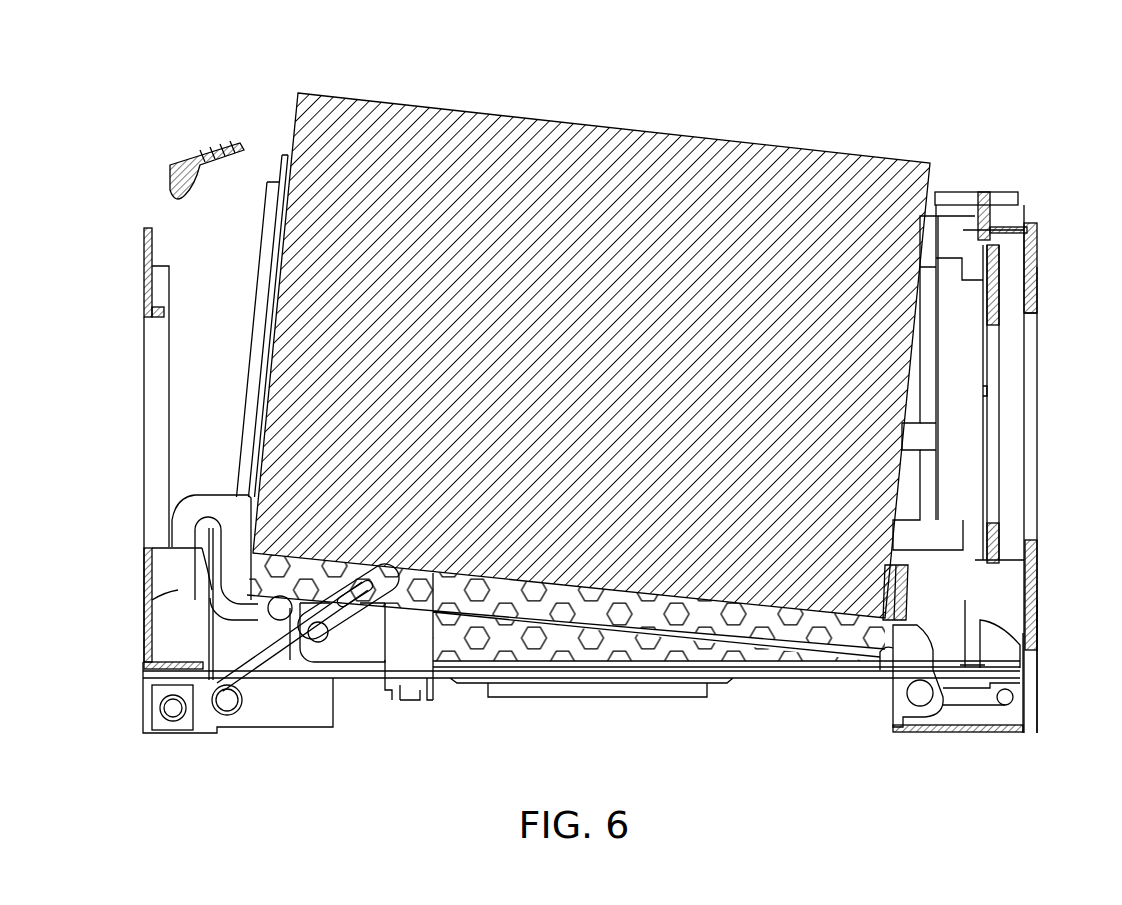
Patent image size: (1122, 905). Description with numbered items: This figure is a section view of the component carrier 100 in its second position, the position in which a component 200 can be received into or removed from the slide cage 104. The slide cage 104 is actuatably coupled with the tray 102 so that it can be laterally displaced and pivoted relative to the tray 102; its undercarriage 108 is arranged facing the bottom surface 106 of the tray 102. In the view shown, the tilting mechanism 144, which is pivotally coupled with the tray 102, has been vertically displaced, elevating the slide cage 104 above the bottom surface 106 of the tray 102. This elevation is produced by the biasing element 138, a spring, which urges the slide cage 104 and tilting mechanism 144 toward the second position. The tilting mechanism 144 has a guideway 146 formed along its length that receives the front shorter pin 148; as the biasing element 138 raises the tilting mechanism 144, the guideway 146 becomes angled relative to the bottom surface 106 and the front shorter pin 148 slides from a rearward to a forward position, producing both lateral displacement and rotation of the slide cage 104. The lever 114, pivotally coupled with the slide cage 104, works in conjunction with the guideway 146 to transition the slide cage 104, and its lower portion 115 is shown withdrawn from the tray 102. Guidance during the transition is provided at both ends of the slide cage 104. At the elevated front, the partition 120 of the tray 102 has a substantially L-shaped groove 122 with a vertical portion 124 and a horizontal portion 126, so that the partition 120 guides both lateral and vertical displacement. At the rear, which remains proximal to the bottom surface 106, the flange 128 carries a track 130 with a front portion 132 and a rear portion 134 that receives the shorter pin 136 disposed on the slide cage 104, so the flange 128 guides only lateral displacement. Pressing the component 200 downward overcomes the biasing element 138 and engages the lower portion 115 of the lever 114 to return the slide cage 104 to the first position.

The component carrier 100 is at (262, 72).
The tray 102 is at (143, 243).
The slide cage 104 is at (590, 620).
The bottom surface 106 is at (487, 687).
The undercarriage 108 is at (690, 650).
The lever 114 is at (207, 150).
The lower portion 115 is at (403, 700).
The partition 120 is at (178, 600).
The groove 122 is at (222, 497).
The vertical portion 124 is at (178, 549).
The horizontal portion 126 is at (268, 660).
The flange 128 is at (893, 697).
The track 130 is at (1005, 693).
The front portion 132 is at (990, 732).
The rear portion 134 is at (935, 728).
The shorter pin 136 is at (918, 700).
The biasing element 138 is at (243, 716).
The tilting mechanism 144 is at (290, 640).
The guideway 146 is at (360, 600).
The front shorter pin 148 is at (318, 632).
The component 200 is at (848, 182).